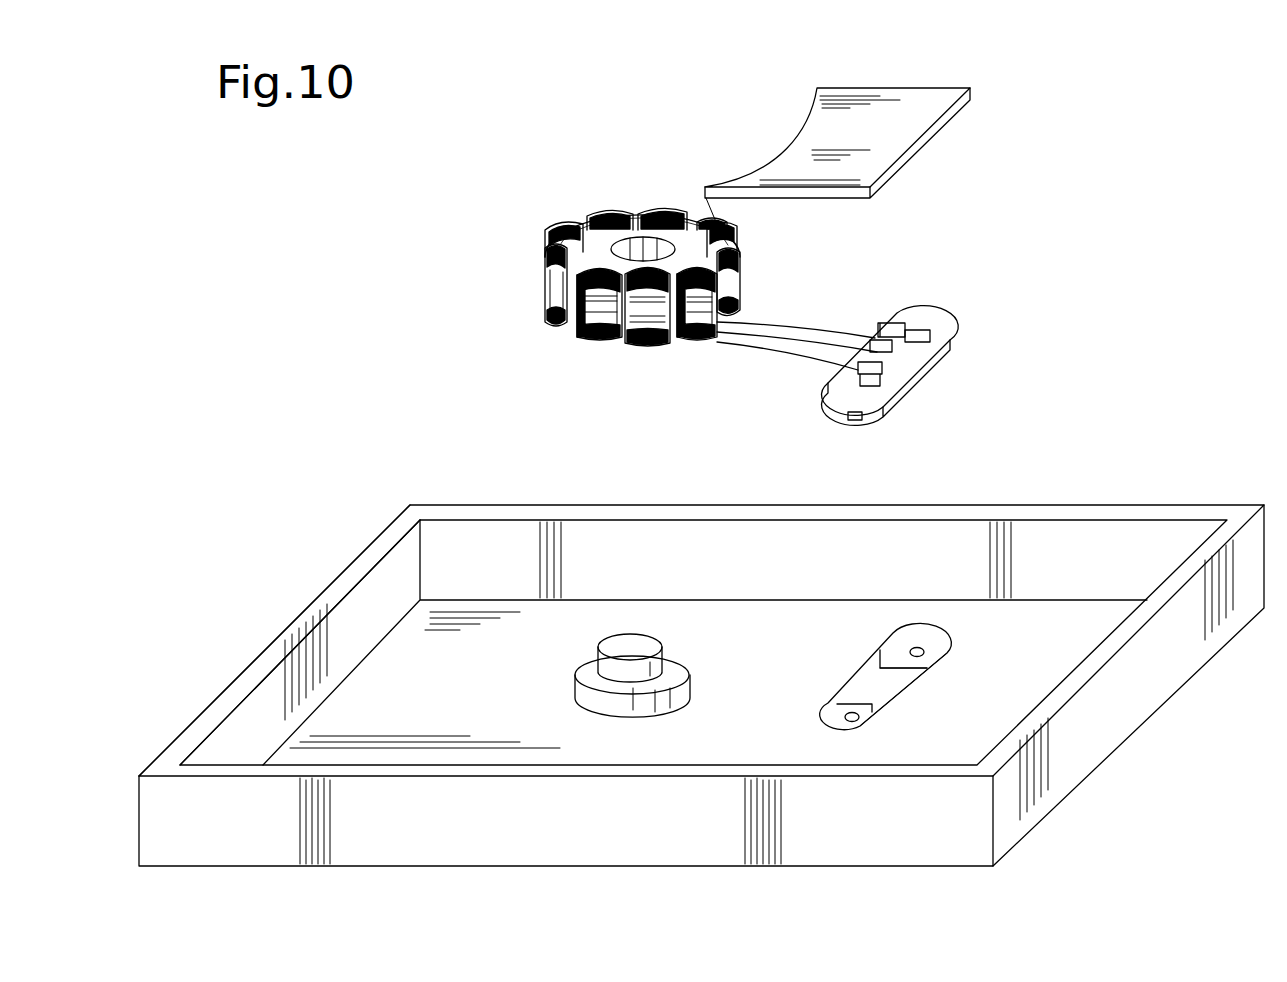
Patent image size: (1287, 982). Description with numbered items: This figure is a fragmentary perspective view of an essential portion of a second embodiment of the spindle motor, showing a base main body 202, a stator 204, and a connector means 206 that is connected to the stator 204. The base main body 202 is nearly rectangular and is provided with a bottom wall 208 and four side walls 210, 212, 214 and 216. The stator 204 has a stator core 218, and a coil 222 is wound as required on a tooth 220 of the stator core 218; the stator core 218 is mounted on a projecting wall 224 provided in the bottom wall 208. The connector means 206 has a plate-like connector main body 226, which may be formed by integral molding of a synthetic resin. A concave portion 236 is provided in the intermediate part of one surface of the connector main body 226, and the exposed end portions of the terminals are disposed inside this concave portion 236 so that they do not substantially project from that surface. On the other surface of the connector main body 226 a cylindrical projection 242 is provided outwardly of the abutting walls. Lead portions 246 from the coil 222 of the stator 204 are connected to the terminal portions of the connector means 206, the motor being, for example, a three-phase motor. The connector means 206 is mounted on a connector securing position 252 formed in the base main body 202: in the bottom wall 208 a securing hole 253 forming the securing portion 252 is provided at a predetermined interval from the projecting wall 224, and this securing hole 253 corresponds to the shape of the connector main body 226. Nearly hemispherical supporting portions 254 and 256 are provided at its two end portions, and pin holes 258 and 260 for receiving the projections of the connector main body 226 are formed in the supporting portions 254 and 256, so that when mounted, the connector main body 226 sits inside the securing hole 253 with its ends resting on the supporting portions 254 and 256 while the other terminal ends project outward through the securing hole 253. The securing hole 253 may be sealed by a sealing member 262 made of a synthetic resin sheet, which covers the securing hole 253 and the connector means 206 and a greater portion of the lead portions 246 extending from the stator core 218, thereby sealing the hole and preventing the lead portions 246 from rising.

The base main body 202 is at (701, 659).
The stator 204 is at (586, 248).
The connector means 206 is at (950, 347).
The bottom wall 208 is at (392, 667).
The side wall 210 is at (948, 853).
The side wall 212 is at (1137, 703).
The side wall 214 is at (1160, 527).
The side wall 216 is at (252, 697).
The stator core 218 is at (610, 205).
The tooth 220 is at (678, 212).
The coil 222 is at (657, 212).
The projecting wall 224 is at (625, 636).
The connector main body 226 is at (893, 318).
The concave portion 236 is at (912, 356).
The projection 242 is at (857, 420).
The lead portions 246 is at (788, 363).
The connector securing position 252 is at (919, 648).
The securing hole 253 is at (897, 680).
The supporting portion 254 is at (877, 710).
The supporting portion 256 is at (891, 653).
The pin hole 258 is at (847, 724).
The pin hole 260 is at (918, 648).
The sealing member 262 is at (932, 113).